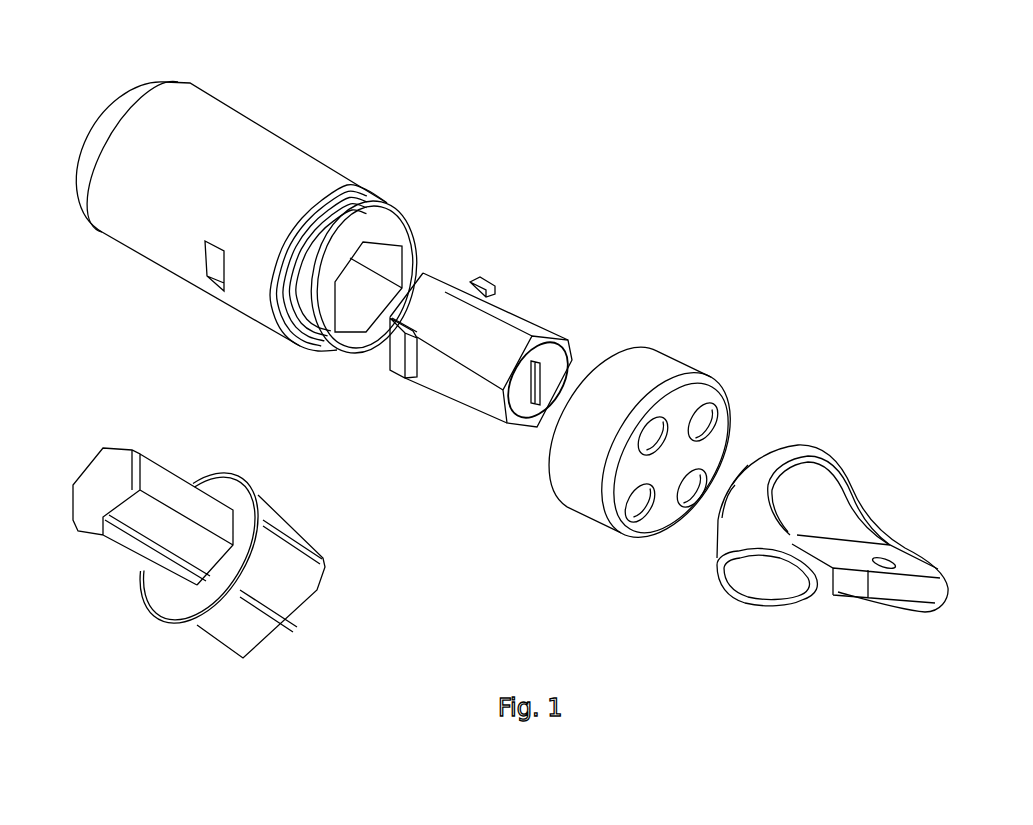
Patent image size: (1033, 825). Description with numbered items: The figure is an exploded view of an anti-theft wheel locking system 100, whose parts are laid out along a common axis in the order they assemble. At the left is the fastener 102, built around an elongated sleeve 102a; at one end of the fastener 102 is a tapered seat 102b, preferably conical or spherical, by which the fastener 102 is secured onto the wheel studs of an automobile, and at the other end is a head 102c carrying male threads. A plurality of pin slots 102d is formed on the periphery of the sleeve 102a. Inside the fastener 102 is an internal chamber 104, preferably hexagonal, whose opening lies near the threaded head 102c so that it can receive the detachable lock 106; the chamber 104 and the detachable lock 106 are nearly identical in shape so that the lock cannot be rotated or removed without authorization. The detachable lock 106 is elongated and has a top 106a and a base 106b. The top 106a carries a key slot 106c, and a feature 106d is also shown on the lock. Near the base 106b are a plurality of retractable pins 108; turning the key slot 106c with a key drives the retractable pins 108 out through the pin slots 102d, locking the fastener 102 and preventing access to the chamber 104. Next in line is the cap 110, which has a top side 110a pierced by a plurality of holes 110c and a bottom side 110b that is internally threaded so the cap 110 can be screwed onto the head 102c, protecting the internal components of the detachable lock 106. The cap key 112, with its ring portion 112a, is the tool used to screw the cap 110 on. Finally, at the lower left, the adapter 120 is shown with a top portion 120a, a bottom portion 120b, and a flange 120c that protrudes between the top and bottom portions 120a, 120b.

The anti-theft wheel locking system 100 is at (815, 120).
The fastener 102 is at (420, 215).
The elongated sleeve 102a is at (237, 213).
The seat 102b is at (84, 166).
The head 102c is at (297, 313).
The pin slots 102d is at (206, 272).
The internal chamber 104 is at (352, 308).
The detachable lock 106 is at (585, 347).
The top 106a is at (527, 381).
The base 106b is at (416, 315).
The key slot 106c is at (531, 397).
The bore 106d is at (518, 402).
The retractable pins 108 is at (402, 360).
The cap 110 is at (655, 362).
The top side 110a is at (662, 513).
The bottom side 110b is at (575, 402).
The holes 110c is at (705, 413).
The cap key 112 is at (838, 488).
The clip ring 112a is at (722, 515).
The adapter 120 is at (323, 550).
The top portion 120a is at (120, 543).
The bottom portion 120b is at (298, 593).
The flange 120c is at (210, 592).